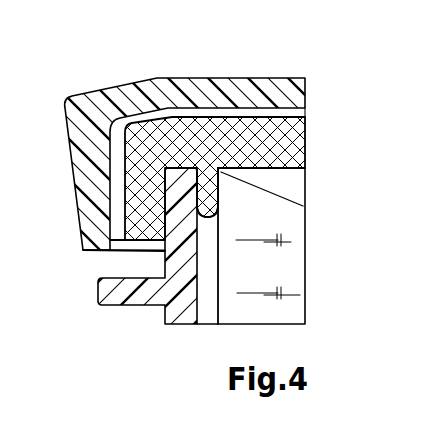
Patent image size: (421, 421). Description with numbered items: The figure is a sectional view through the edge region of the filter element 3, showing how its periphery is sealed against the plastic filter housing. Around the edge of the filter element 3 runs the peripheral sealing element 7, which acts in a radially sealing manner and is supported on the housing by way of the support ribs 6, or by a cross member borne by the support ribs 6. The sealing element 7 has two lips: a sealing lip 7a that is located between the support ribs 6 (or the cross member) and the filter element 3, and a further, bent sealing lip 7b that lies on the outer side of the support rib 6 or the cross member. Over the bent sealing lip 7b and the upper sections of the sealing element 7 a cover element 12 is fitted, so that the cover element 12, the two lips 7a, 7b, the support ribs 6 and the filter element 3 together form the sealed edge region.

The cover element 12 is at (193, 85).
The peripheral sealing element 7 is at (297, 143).
The sealing lip 7a is at (213, 195).
The bent sealing lip 7b is at (108, 254).
The support ribs 6 is at (160, 308).
The filter element 3 is at (290, 272).